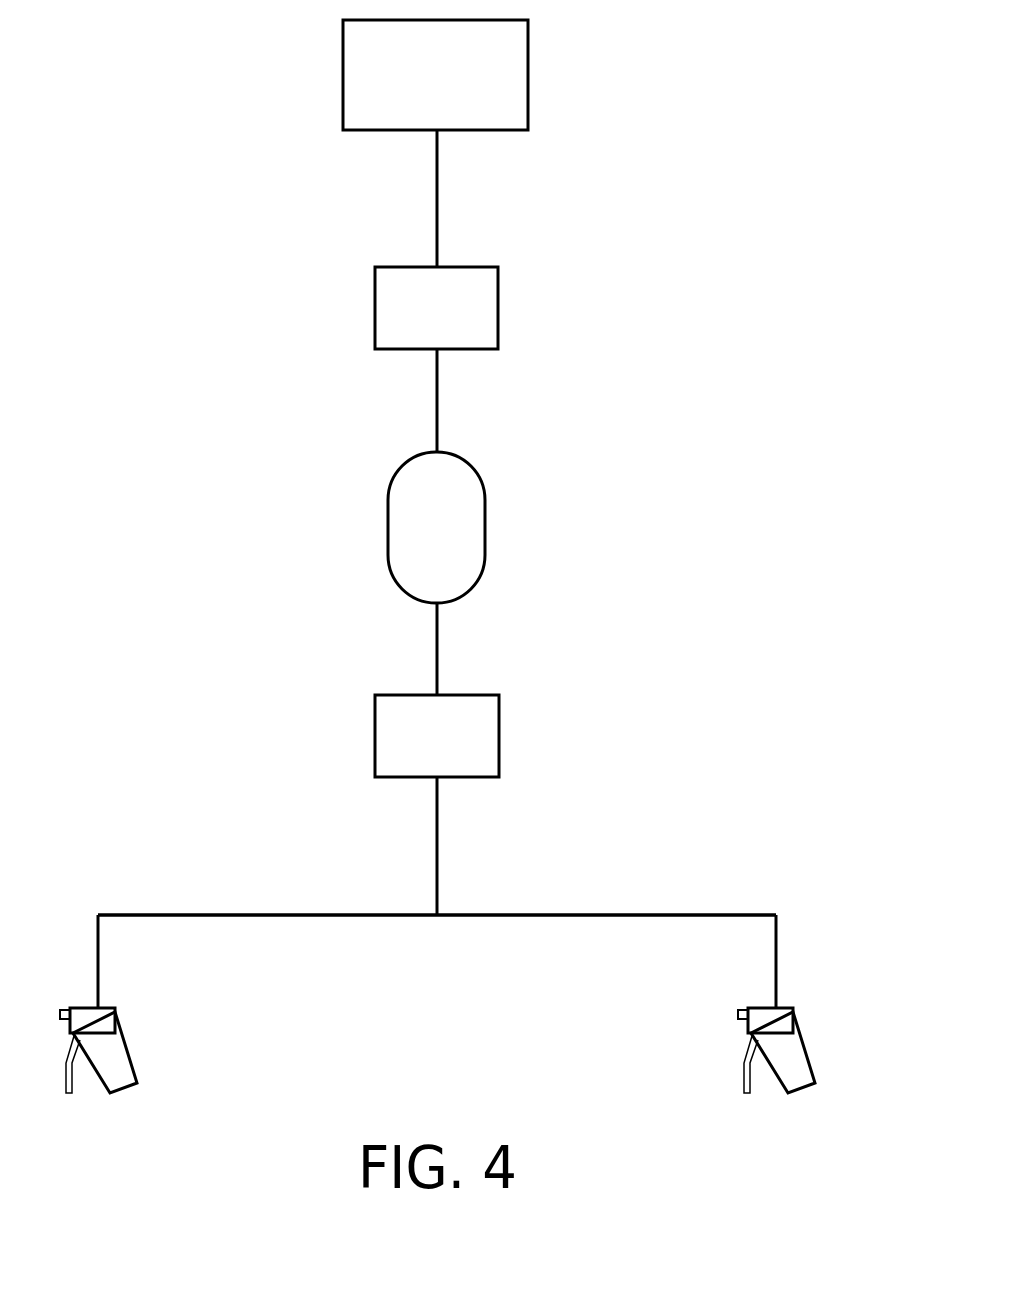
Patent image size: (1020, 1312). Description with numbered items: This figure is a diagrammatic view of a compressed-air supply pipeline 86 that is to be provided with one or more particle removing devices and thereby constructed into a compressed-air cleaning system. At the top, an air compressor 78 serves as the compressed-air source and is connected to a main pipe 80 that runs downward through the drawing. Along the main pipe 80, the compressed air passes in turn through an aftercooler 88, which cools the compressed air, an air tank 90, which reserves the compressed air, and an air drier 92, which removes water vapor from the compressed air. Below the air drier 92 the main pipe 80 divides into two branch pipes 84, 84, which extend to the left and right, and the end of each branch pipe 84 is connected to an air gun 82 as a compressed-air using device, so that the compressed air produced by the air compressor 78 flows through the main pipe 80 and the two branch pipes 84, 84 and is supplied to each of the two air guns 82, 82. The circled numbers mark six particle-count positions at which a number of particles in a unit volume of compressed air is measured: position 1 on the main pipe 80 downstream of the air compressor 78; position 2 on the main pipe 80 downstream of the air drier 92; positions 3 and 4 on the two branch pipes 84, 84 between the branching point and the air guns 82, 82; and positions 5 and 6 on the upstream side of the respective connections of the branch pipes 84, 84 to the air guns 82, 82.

The air compressor 78 is at (510, 75).
The aftercooler 88 is at (483, 309).
The main pipe 80 is at (438, 410).
The air tank 90 is at (470, 536).
The air drier 92 is at (478, 741).
The compressed-air supply pipeline 86 is at (637, 288).
The branch pipe 84 is at (211, 914).
The air gun 82 is at (112, 1054).
The particle-count position 1 is at (465, 198).
The particle-count position 2 is at (466, 846).
The particle-count position 3 is at (267, 886).
The particle-count position 4 is at (606, 886).
The particle-count position 5 is at (69, 961).
The particle-count position 6 is at (804, 961).